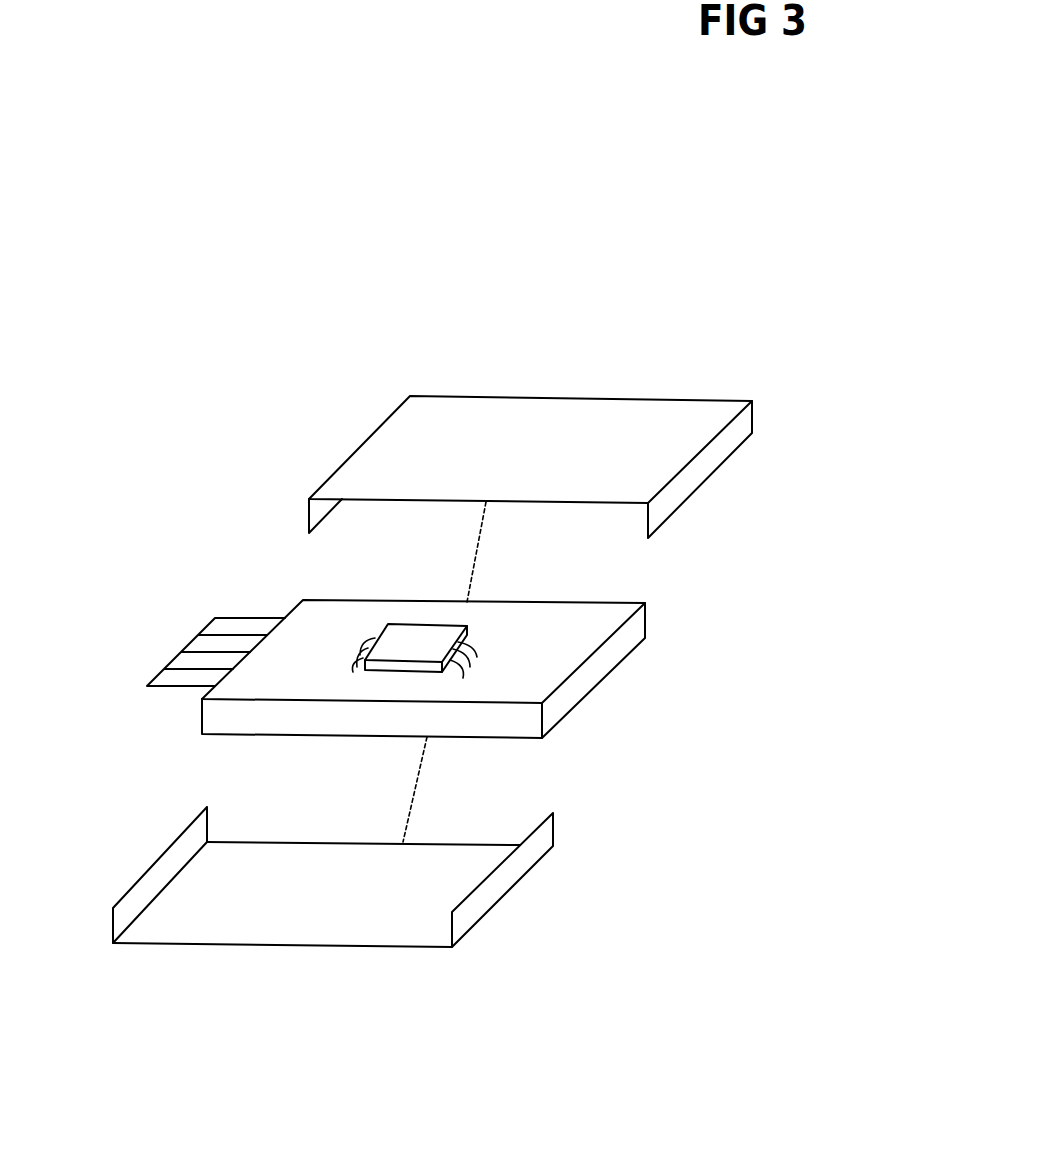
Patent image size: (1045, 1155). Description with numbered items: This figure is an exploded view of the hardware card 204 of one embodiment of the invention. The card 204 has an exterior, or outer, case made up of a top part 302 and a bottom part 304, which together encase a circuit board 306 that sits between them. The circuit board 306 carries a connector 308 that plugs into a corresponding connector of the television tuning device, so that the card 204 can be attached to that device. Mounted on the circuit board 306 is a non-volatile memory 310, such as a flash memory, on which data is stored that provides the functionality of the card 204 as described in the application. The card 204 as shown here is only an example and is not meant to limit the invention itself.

The card 204 is at (607, 942).
The top part 302 is at (309, 515).
The bottom part 304 is at (113, 941).
The circuit board 306 is at (610, 668).
The connector 308 is at (147, 686).
The non-volatile memory 310 is at (390, 623).